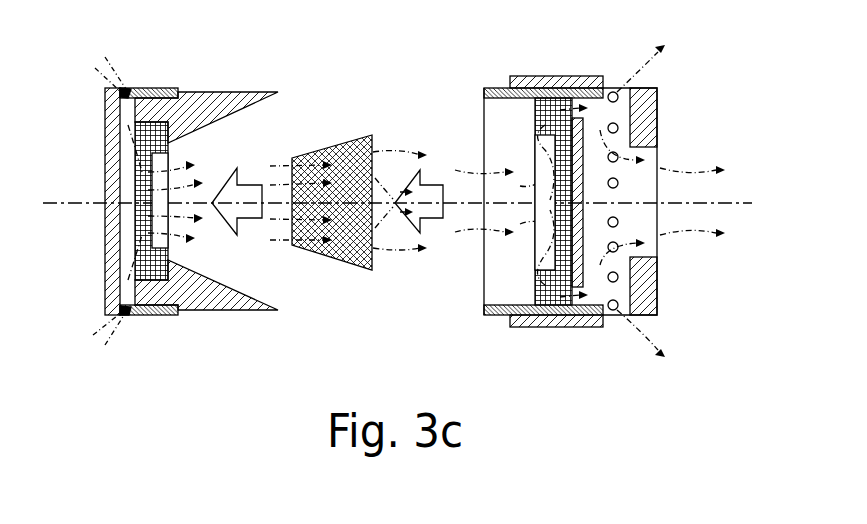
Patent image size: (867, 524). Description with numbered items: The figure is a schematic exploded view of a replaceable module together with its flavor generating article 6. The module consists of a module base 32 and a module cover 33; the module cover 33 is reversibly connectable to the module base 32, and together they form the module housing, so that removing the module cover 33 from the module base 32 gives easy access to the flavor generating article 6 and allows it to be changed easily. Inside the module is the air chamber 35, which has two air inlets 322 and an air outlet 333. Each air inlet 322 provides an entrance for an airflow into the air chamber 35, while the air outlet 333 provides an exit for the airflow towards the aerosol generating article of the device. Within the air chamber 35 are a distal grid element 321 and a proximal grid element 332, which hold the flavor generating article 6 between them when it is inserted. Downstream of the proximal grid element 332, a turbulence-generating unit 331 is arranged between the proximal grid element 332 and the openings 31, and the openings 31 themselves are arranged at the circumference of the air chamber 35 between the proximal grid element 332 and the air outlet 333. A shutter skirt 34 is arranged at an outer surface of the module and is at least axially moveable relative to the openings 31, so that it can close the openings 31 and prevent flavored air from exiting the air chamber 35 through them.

The flavor generating article 6 is at (340, 138).
The openings 31 is at (613, 92).
The module base 32 is at (205, 90).
The distal grid element 321 is at (160, 270).
The air inlets 322 is at (118, 88).
The module cover 33 is at (657, 110).
The turbulence-generating unit 331 is at (583, 272).
The proximal grid element 332 is at (555, 290).
The air outlet 333 is at (657, 165).
The shutter skirt 34 is at (562, 76).
The air chamber 35 is at (632, 192).